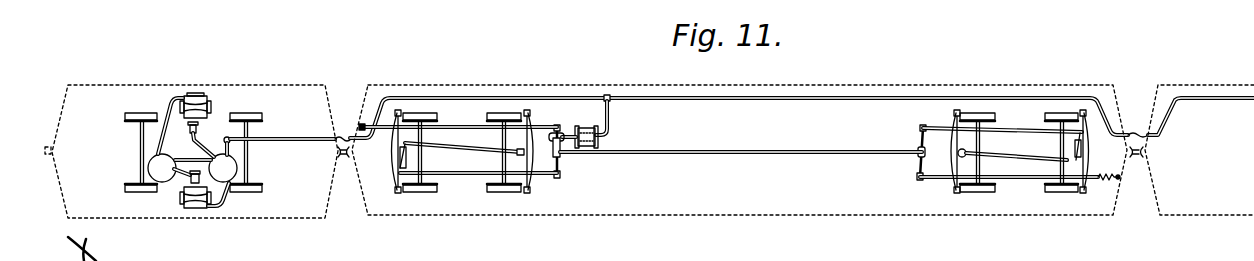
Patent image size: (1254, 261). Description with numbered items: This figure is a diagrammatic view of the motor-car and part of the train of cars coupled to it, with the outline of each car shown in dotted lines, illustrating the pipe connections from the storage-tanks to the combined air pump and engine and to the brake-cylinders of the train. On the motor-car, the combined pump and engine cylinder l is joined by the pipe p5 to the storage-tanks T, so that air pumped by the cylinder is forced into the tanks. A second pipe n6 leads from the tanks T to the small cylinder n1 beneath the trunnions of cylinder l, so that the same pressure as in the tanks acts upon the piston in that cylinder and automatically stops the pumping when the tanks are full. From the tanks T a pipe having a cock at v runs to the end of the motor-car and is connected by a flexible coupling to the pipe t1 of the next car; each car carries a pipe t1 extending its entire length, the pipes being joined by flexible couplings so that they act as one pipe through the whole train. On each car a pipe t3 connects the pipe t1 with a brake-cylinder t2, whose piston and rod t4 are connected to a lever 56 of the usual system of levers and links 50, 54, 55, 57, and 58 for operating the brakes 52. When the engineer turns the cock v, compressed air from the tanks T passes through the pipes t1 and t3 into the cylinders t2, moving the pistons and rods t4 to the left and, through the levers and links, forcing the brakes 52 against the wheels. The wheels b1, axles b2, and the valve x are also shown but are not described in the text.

The pipe p5 is at (172, 106).
The cylinder l is at (191, 99).
The car wheels b1 is at (192, 142).
The axle b2 is at (184, 152).
The cylinder n1 is at (198, 132).
The pipe n6 is at (199, 141).
The cock v is at (223, 139).
The pipe t1 is at (297, 141).
The valve x is at (200, 178).
The storage-tanks T is at (192, 168).
The brakes 52 is at (393, 143).
The lever or link 57 is at (739, 152).
The lever or link 55 is at (736, 148).
The lever or link 50 is at (398, 157).
The lever or link 54 is at (741, 155).
The lever 56 is at (562, 163).
The piston rod t4 is at (561, 131).
The cylinder t2 is at (586, 126).
The pipe t3 is at (608, 116).
The lever or link 58 is at (741, 145).